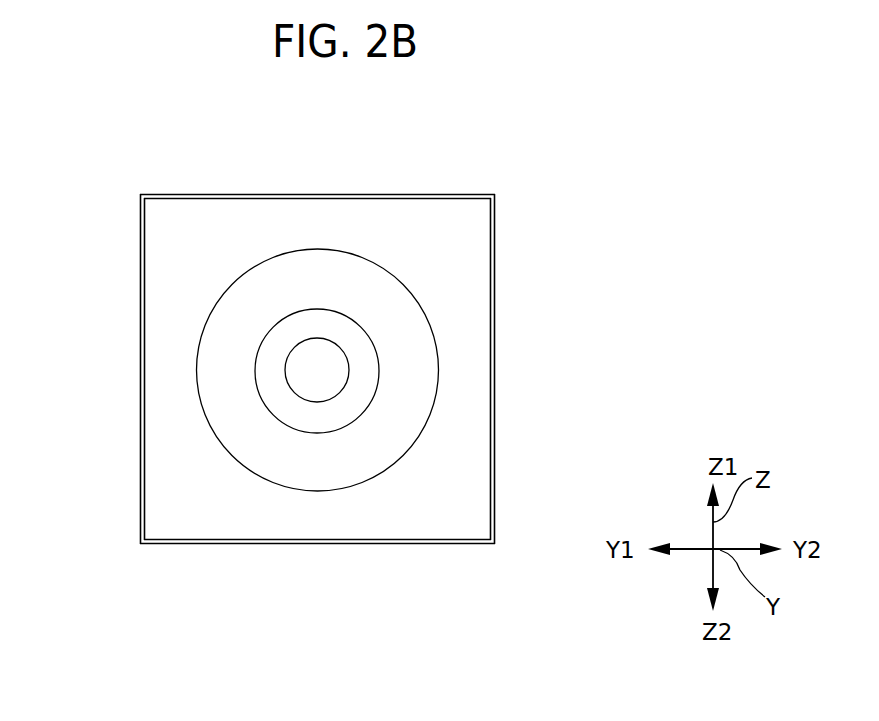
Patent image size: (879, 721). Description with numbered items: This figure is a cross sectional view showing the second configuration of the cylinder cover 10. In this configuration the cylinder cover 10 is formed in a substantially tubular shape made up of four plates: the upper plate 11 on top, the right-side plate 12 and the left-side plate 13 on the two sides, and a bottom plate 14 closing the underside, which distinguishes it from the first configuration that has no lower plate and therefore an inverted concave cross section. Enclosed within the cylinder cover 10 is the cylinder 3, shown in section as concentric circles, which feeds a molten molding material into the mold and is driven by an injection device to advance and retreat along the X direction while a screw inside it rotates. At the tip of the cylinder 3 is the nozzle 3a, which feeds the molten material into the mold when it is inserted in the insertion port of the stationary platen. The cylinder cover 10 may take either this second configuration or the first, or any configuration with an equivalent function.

The cylinder cover 10 is at (528, 174).
The upper plate 11 is at (308, 195).
The right-side plate 12 is at (138, 360).
The left-side plate 13 is at (492, 357).
The bottom plate 14 is at (307, 545).
The cylinder 3 is at (242, 467).
The nozzle 3a is at (325, 402).